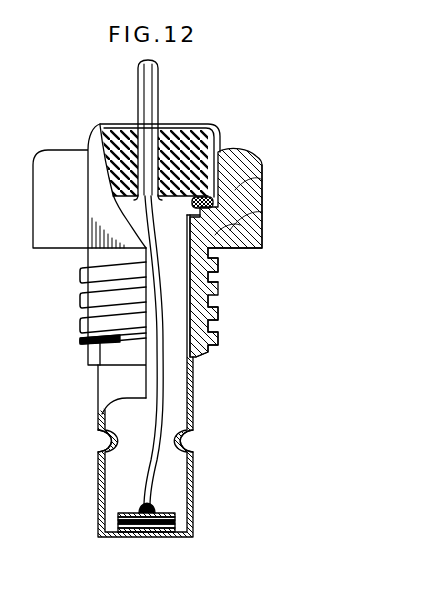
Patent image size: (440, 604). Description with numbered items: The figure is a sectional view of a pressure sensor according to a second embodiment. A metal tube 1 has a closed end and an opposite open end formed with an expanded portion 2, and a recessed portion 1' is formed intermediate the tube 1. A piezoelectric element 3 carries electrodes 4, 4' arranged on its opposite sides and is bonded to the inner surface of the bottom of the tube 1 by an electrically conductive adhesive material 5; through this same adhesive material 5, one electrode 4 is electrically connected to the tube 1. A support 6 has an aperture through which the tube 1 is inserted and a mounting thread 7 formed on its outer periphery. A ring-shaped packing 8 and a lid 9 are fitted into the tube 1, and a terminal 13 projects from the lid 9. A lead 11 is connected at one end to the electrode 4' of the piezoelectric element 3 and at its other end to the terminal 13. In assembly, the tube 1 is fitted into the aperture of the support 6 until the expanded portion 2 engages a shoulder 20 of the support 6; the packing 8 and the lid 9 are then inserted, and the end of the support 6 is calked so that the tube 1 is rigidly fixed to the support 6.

The metal tube 1 is at (165, 376).
The recessed portion 1' is at (168, 438).
The expanded portion 2 is at (262, 237).
The piezoelectric element 3 is at (126, 527).
The electrode 4 is at (177, 529).
The electrode 4' is at (176, 492).
The electrically conductive adhesive material 5 is at (152, 538).
The support 6 is at (250, 173).
The mounting thread 7 is at (218, 318).
The ring-shaped packing 8 is at (262, 217).
The lid 9 is at (203, 146).
The lead 11 is at (163, 347).
The terminal 13 is at (158, 98).
The shoulder 20 is at (222, 252).